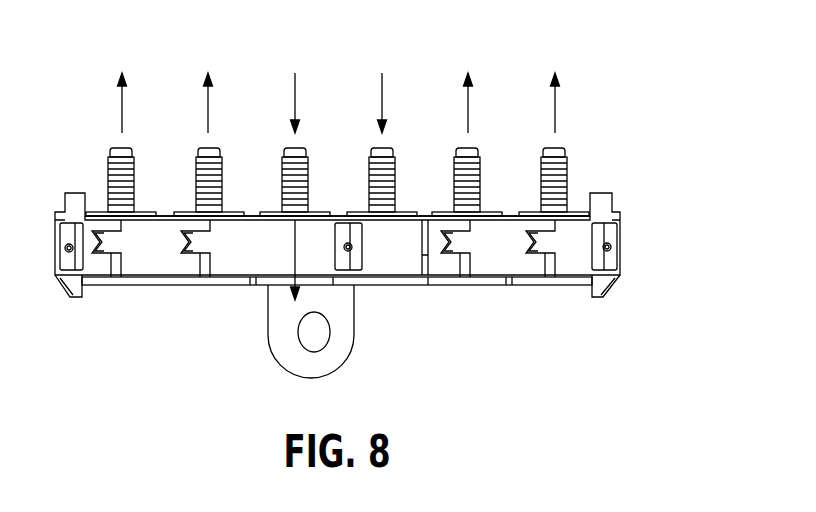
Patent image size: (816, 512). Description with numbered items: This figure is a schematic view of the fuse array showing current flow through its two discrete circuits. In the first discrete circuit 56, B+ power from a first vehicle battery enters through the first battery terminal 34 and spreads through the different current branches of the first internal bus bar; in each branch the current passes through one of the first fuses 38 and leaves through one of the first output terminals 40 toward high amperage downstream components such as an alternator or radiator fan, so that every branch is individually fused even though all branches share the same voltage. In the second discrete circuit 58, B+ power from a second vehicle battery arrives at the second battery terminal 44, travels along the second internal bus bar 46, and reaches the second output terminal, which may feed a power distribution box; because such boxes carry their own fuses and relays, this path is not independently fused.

The first battery terminal 34 is at (400, 212).
The set of first fuses 38 is at (112, 278).
The set of first output terminals 40 is at (180, 212).
The second battery terminal 44 is at (270, 212).
The second internal bus bar 46 is at (338, 332).
The first discrete circuit 56 is at (387, 208).
The second discrete circuit 58 is at (310, 143).